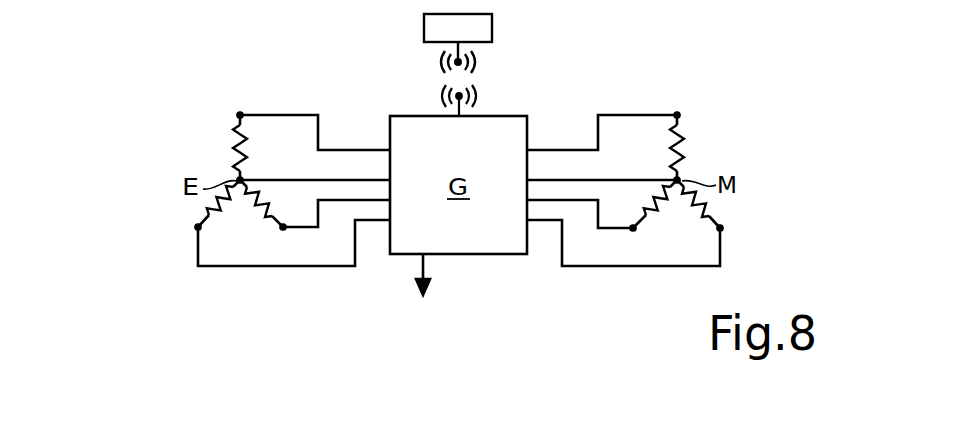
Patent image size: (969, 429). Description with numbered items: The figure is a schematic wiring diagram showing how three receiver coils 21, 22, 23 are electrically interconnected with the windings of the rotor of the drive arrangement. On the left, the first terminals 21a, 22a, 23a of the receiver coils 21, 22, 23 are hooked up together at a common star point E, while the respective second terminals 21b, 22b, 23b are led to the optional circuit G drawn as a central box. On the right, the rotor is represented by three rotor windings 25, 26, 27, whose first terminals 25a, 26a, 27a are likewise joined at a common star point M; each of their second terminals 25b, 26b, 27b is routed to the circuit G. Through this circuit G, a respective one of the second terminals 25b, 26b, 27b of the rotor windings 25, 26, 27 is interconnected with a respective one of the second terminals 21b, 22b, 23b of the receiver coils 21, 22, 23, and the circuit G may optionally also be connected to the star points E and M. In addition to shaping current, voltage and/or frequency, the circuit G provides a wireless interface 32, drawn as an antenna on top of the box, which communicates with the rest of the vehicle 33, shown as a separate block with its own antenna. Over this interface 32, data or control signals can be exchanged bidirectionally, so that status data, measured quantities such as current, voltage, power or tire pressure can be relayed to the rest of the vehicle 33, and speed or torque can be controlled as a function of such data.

The receiver coil 21 is at (213, 211).
The receiver coil 22 is at (240, 133).
The receiver coil 23 is at (252, 207).
The first terminal 21a is at (145, 160).
The first terminal 22a is at (145, 160).
The first terminal 23a is at (240, 178).
The second terminal 21b is at (198, 227).
The second terminal 22b is at (240, 113).
The second terminal 23b is at (283, 233).
The rotor winding 25 is at (664, 212).
The rotor winding 26 is at (682, 134).
The rotor winding 27 is at (705, 213).
The first terminal 25a is at (767, 160).
The first terminal 26a is at (767, 160).
The first terminal 27a is at (680, 174).
The second terminal 25b is at (633, 233).
The second terminal 26b is at (678, 113).
The second terminal 27b is at (724, 229).
The wireless interface 32 is at (462, 112).
The rest of the vehicle 33 is at (492, 30).